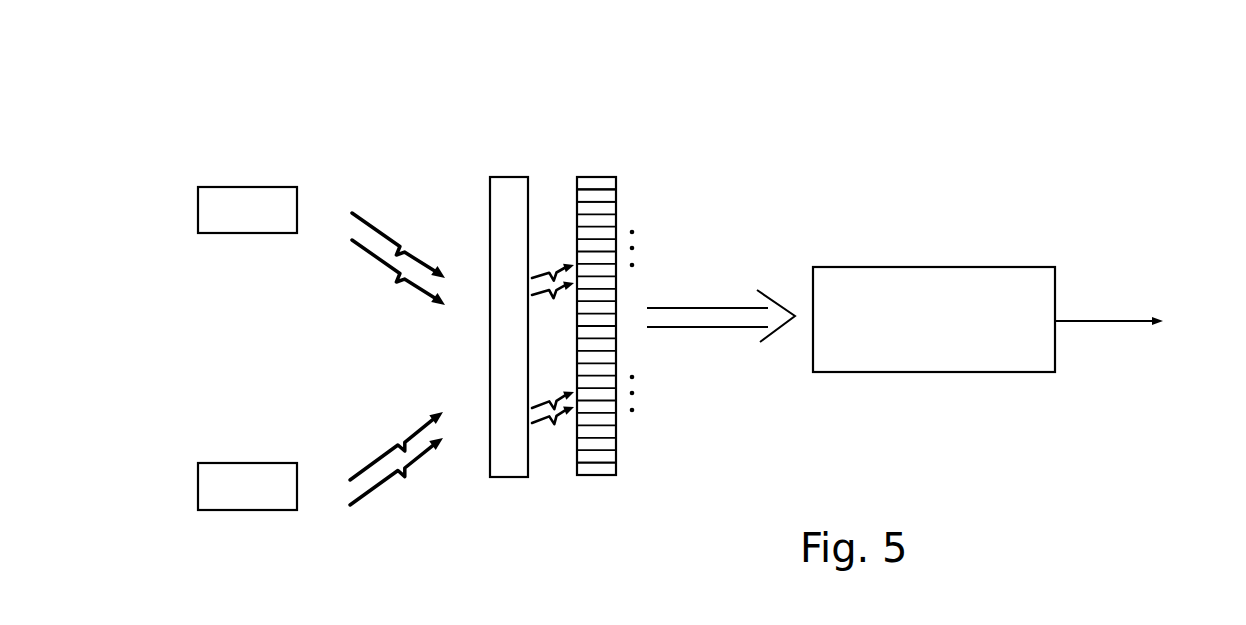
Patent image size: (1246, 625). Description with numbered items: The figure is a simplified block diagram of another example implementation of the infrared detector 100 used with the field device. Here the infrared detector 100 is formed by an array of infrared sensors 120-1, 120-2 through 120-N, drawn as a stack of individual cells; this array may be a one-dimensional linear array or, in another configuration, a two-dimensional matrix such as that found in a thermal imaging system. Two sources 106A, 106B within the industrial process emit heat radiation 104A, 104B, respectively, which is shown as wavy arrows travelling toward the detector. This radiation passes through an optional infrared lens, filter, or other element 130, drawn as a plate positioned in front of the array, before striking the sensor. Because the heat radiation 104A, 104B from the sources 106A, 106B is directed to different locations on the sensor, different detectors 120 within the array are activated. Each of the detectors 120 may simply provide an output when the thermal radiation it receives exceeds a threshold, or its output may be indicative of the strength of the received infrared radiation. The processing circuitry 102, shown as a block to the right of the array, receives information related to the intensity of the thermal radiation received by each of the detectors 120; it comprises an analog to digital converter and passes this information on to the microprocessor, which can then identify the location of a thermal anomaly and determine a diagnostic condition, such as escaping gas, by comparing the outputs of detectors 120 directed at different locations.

The detectors 120 is at (835, 83).
The source 106A is at (247, 210).
The source 106B is at (247, 486).
The heat radiation 104A is at (367, 221).
The heat radiation 104B is at (385, 476).
The infrared lens, filter, or other element 130 is at (510, 177).
The infrared detector 100 is at (598, 176).
The infrared sensor 120-1 is at (616, 183).
The infrared sensor 120-2 is at (616, 196).
The infrared sensor 120-N is at (616, 471).
The processing circuitry 102 is at (930, 267).